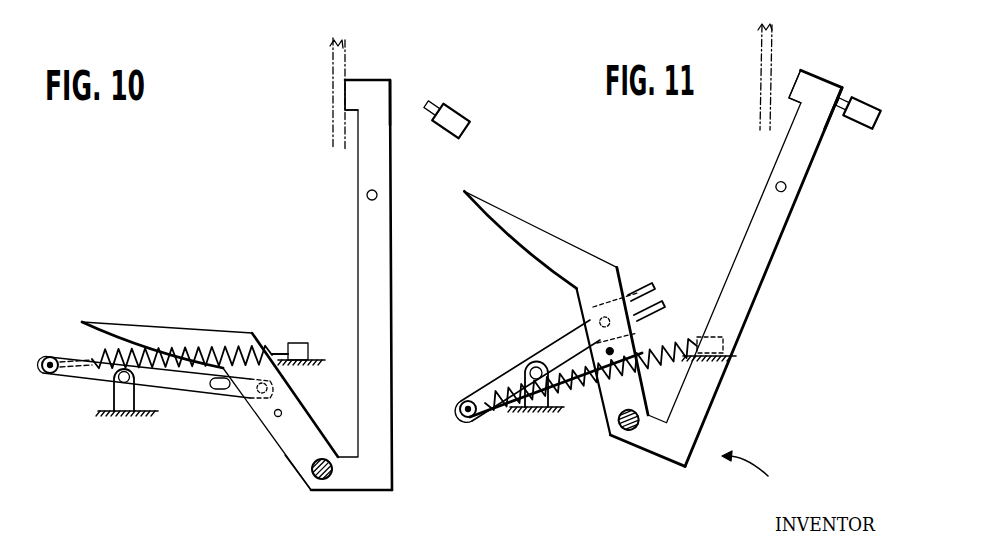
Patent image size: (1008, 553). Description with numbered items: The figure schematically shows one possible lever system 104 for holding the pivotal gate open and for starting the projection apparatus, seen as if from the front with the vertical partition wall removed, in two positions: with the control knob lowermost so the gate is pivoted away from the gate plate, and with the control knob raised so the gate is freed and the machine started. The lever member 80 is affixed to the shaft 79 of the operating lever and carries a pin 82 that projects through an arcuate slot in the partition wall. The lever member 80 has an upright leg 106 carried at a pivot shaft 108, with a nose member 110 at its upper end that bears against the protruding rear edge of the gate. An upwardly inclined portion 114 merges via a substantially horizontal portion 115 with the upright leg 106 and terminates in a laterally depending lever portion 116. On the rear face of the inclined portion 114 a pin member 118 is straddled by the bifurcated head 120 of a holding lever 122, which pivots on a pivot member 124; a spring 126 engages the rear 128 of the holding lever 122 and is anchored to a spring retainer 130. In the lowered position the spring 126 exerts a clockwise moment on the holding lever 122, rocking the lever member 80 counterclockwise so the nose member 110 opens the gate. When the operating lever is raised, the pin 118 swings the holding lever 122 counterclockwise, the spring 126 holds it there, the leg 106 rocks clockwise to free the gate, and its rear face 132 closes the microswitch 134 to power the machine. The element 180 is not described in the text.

In FIG. 10, the shaft 79 is at (313, 483).
In FIG. 11, the shaft 79 is at (621, 432).
In FIG. 10, the lever member 80 is at (300, 446).
In FIG. 10, the pin 82 is at (283, 413).
In FIG. 10, the lever system 104 is at (206, 218).
In FIG. 11, the lever system 104 is at (839, 362).
In FIG. 10, the upright leg 106 is at (370, 255).
In FIG. 11, the upright leg 106 is at (755, 280).
In FIG. 10, the pivot shaft 108 is at (367, 194).
In FIG. 11, the pivot shaft 108 is at (791, 190).
In FIG. 10, the nose member 110 is at (359, 84).
In FIG. 11, the nose member 110 is at (806, 80).
In FIG. 10, the upwardly inclined portion 114 is at (268, 430).
In FIG. 11, the upwardly inclined portion 114 is at (618, 390).
In FIG. 10, the substantially horizontal portion 115 is at (365, 478).
In FIG. 11, the substantially horizontal portion 115 is at (673, 453).
In FIG. 10, the laterally depending lever portion 116 is at (155, 332).
In FIG. 11, the laterally depending lever portion 116 is at (540, 235).
In FIG. 10, the pin member 118 is at (280, 388).
In FIG. 11, the pin member 118 is at (592, 316).
In FIG. 10, the bifurcated head 120 is at (222, 390).
In FIG. 11, the bifurcated head 120 is at (633, 282).
In FIG. 10, the holding lever 122 is at (183, 385).
In FIG. 11, the holding lever 122 is at (560, 342).
In FIG. 10, the pivot member 124 is at (128, 400).
In FIG. 11, the pivot member 124 is at (538, 407).
In FIG. 10, the spring 126 is at (93, 353).
In FIG. 11, the spring 126 is at (588, 383).
In FIG. 10, the rear of the holding lever 128 is at (45, 375).
In FIG. 11, the rear of the holding lever 128 is at (466, 418).
In FIG. 10, the spring retainer 130 is at (300, 343).
In FIG. 11, the spring retainer 130 is at (728, 368).
In FIG. 10, the rear face 132 is at (391, 94).
In FIG. 11, the rear face 132 is at (846, 96).
In FIG. 10, the microswitch 134 is at (449, 118).
In FIG. 11, the microswitch 134 is at (857, 128).
In FIG. 11, the rod 180 is at (640, 336).